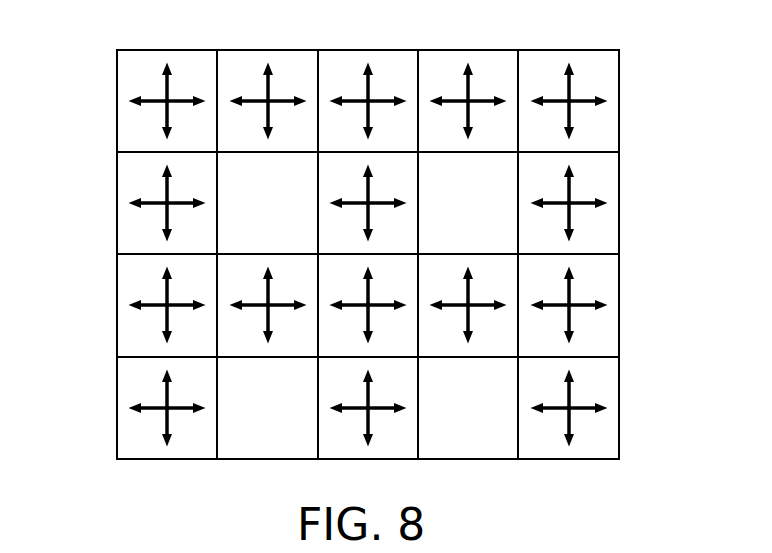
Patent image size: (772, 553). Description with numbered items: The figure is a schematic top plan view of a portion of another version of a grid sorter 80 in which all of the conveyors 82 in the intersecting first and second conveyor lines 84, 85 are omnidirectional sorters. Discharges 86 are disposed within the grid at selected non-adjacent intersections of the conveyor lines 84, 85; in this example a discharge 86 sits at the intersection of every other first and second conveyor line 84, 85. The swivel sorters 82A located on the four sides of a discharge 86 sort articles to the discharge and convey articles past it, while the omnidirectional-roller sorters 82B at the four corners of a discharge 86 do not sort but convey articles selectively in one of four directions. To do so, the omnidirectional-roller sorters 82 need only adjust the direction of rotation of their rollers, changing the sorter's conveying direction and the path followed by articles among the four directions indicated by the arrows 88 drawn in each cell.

The grid sorter 80 is at (73, 28).
The conveyor 82 is at (128, 221).
The swivel sorter 82A is at (603, 226).
The omnidirectional-roller sorter 82B is at (606, 90).
The first conveyor line 84 is at (119, 461).
The second conveyor line 85 is at (627, 362).
The discharge 86 is at (487, 214).
The arrows 88 is at (143, 307).